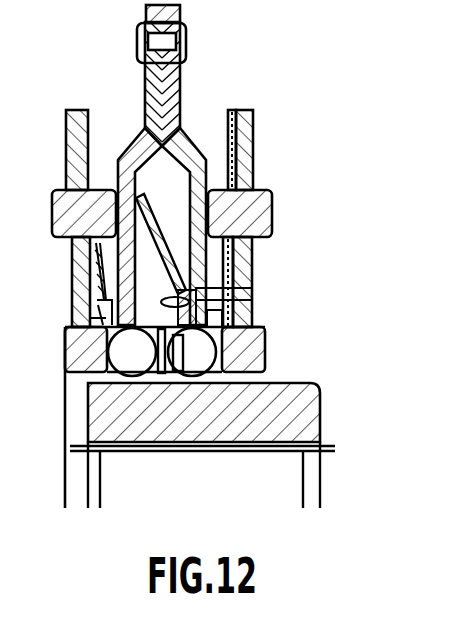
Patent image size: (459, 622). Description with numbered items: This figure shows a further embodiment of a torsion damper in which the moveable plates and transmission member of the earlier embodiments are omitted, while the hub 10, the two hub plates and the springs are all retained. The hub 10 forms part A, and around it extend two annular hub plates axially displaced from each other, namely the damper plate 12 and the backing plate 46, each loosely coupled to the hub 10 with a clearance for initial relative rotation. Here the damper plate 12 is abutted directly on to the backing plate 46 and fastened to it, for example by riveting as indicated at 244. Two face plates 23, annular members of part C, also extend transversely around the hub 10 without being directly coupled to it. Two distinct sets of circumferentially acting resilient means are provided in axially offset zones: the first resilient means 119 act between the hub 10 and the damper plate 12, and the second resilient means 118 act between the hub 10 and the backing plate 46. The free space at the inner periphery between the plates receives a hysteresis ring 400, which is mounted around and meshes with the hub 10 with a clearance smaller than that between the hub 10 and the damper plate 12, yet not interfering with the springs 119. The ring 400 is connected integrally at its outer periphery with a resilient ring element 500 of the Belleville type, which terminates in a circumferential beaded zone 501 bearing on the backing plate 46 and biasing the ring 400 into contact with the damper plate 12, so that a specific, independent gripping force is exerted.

The hub 10 is at (296, 404).
The damper plate 12 is at (181, 95).
The face plate 23 is at (66, 155).
The backing plate 46 is at (143, 86).
The second resilient means 118 is at (134, 360).
The first resilient means 119 is at (201, 360).
The riveting 244 is at (196, 38).
The hysteresis ring 400 is at (253, 290).
The resilient ring element 500 is at (160, 198).
The circumferential beaded zone 501 is at (117, 195).